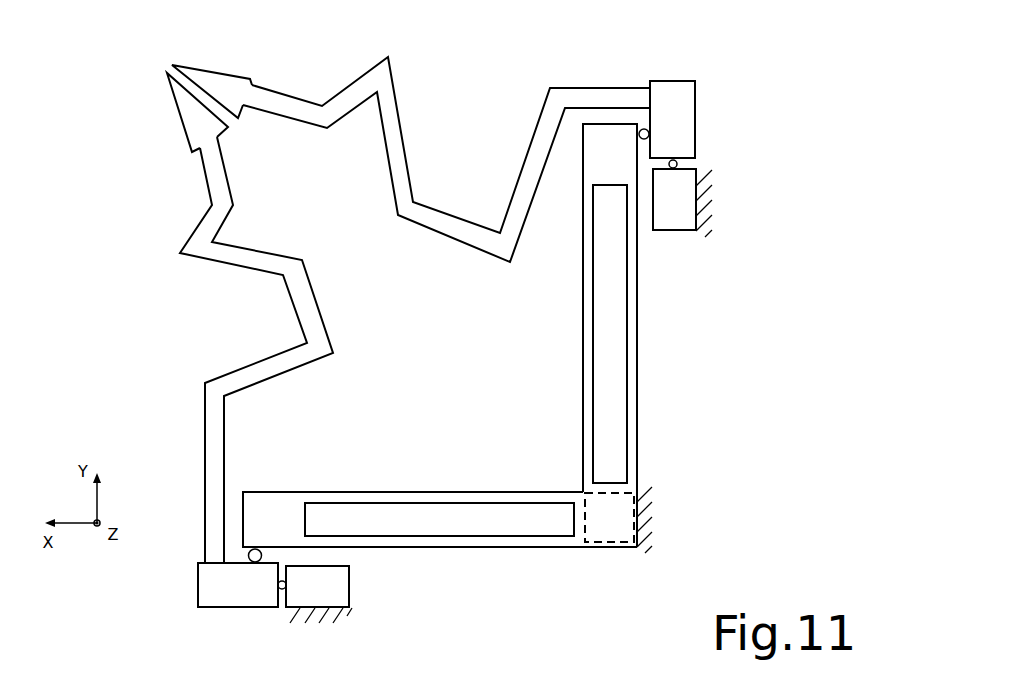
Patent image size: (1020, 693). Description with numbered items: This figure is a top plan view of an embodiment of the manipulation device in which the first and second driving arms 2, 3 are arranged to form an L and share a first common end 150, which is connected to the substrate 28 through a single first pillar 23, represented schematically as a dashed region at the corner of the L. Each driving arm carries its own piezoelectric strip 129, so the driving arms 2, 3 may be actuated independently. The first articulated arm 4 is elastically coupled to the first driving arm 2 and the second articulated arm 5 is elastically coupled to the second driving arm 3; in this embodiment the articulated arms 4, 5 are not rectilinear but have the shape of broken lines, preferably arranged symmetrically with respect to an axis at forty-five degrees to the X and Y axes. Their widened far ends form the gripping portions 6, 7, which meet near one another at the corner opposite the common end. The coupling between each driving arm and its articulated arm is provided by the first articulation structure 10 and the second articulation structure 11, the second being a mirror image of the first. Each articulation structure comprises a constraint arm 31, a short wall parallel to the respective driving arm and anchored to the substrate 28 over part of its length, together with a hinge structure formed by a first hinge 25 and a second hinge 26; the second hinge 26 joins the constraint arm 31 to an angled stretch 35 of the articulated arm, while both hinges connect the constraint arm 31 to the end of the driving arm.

The first driving arm 2 is at (632, 387).
The second driving arm 3 is at (517, 545).
The first articulated arm 4 is at (453, 228).
The second articulated arm 5 is at (220, 415).
The gripping portion 6 is at (218, 82).
The gripping portion 7 is at (183, 110).
The first articulation structure 10 is at (713, 153).
The second articulation structure 11 is at (278, 613).
The first pillar 23 is at (587, 548).
The first hinge 25 is at (645, 128).
The second hinge 26 is at (677, 164).
The substrate 28 is at (708, 215).
The constraint arm 31 is at (682, 223).
The angled stretch 35 is at (673, 86).
The piezoelectric strips 129 is at (605, 427).
The first common end 150 is at (612, 517).